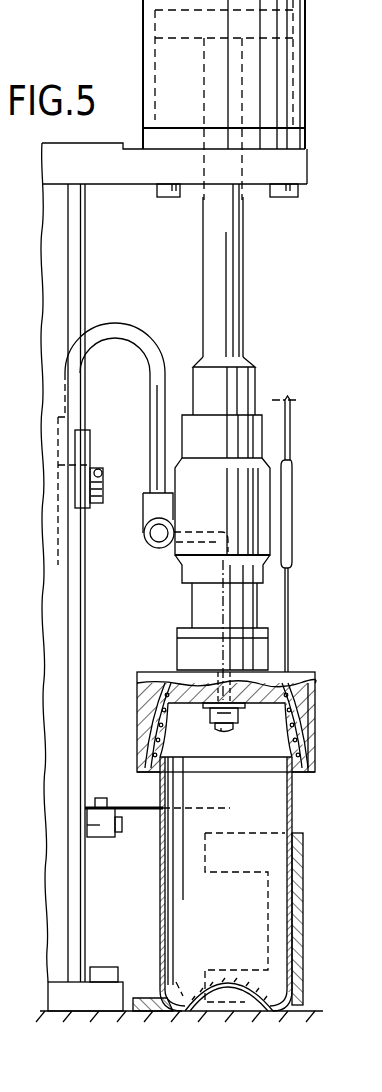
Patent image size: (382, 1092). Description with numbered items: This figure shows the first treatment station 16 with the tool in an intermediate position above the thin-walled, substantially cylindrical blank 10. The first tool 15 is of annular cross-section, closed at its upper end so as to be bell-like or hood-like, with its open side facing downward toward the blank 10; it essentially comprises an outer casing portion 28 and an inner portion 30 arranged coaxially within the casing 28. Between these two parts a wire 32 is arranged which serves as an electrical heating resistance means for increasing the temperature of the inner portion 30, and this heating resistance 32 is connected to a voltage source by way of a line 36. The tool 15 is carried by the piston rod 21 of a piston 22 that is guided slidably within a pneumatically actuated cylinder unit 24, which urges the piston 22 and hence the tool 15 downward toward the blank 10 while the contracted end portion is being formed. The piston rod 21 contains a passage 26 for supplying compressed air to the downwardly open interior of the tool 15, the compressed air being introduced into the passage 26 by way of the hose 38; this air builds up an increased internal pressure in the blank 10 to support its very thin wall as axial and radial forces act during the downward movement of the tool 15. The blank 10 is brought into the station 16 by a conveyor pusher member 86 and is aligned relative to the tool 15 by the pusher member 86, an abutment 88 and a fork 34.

The blank 10 is at (159, 855).
The first tool 15 is at (305, 670).
The first treatment station 16 is at (310, 416).
The piston rod 21 is at (217, 262).
The piston 22 is at (163, 25).
The cylinder unit 24 is at (143, 55).
The passage 26 is at (220, 610).
The outer casing portion 28 is at (315, 703).
The inner portion 30 is at (287, 735).
The wire 32 is at (315, 757).
The fork 34 is at (203, 810).
The line 36 is at (280, 422).
The hose 38 is at (120, 327).
The conveyor pusher member 86 is at (305, 873).
The abutment 88 is at (153, 1014).